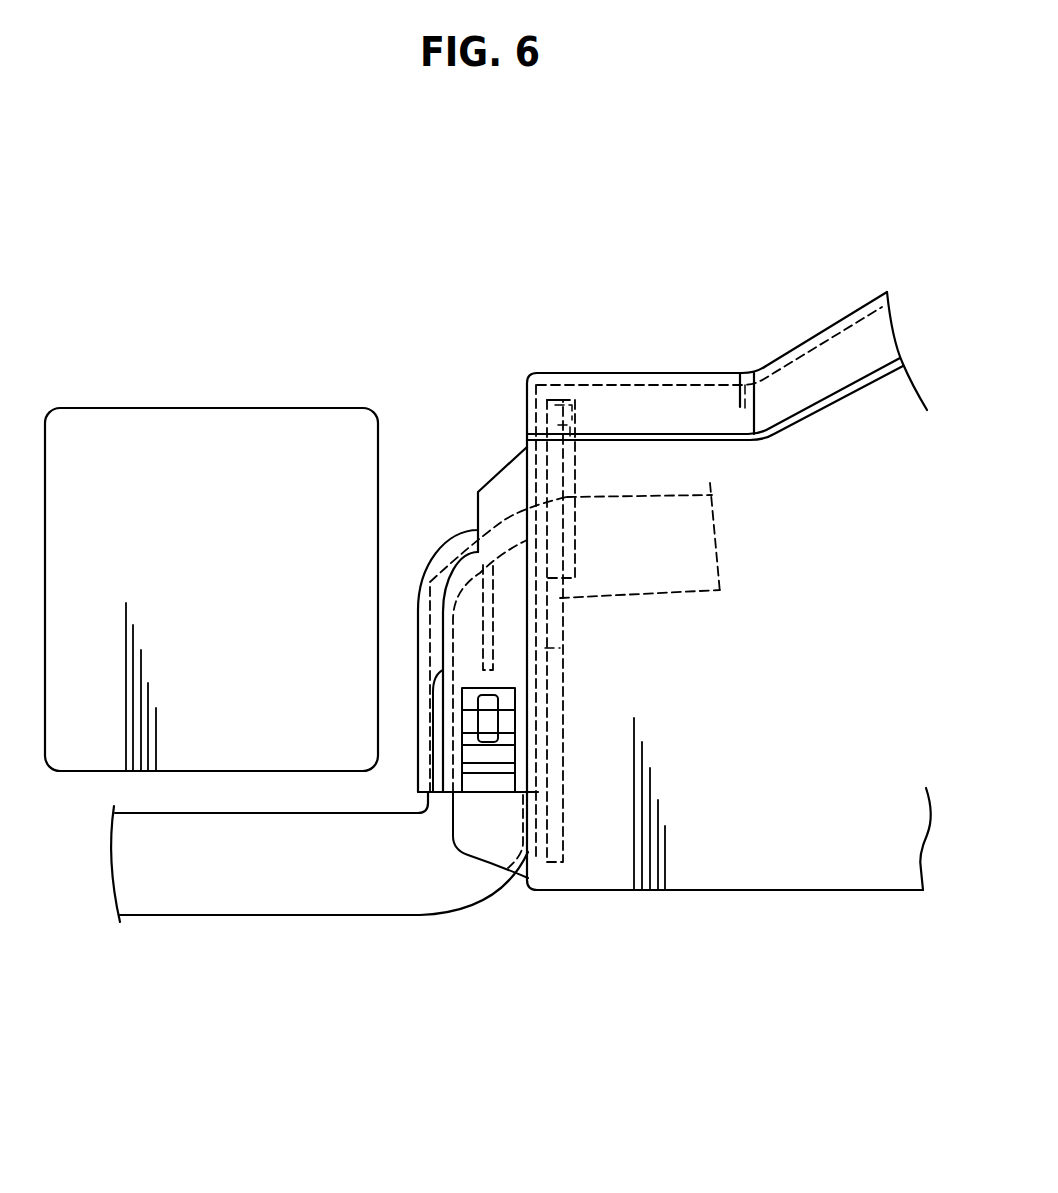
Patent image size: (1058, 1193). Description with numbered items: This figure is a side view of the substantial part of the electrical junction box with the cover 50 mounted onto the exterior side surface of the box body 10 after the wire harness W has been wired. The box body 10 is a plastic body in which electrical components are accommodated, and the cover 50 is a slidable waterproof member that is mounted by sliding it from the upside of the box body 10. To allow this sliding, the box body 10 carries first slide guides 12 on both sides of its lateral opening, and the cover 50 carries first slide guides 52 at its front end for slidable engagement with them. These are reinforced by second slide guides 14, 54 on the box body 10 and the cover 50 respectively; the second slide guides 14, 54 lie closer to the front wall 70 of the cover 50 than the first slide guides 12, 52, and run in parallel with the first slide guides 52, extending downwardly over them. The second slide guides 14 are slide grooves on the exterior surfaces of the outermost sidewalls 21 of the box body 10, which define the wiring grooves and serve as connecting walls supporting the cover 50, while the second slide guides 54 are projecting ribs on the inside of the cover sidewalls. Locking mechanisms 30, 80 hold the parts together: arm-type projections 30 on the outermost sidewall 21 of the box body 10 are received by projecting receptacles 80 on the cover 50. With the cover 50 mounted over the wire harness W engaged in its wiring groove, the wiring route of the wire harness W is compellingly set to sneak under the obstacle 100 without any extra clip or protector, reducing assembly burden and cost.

The box body 10 is at (749, 356).
The first slide guide 12 is at (597, 455).
The first slide guide 52 is at (576, 470).
The sidewall 21 is at (498, 530).
The cover 50 is at (445, 557).
The second slide guide 14 is at (388, 644).
The second slide guide 54 is at (430, 582).
The front wall 70 is at (420, 712).
The locking mechanism 30 is at (496, 849).
The locking mechanism 80 is at (490, 765).
The obstacle 100 is at (207, 418).
The wire harness W is at (266, 903).